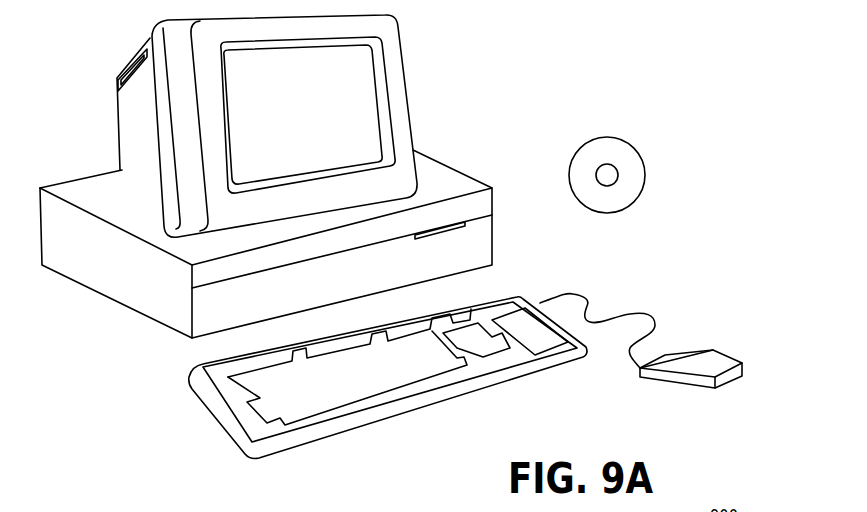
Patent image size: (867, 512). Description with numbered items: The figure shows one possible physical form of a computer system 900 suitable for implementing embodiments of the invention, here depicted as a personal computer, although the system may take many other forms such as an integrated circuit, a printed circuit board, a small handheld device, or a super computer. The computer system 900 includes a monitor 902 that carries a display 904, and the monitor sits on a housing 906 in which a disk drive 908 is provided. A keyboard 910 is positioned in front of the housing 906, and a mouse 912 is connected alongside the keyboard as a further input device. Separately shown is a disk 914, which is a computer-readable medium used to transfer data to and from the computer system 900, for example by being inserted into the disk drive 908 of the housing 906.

The computer system 900 is at (524, 53).
The monitor 902 is at (407, 102).
The display 904 is at (368, 76).
The housing 906 is at (147, 318).
The disk drive 908 is at (468, 222).
The keyboard 910 is at (477, 393).
The mouse 912 is at (720, 362).
The disk 914 is at (625, 137).